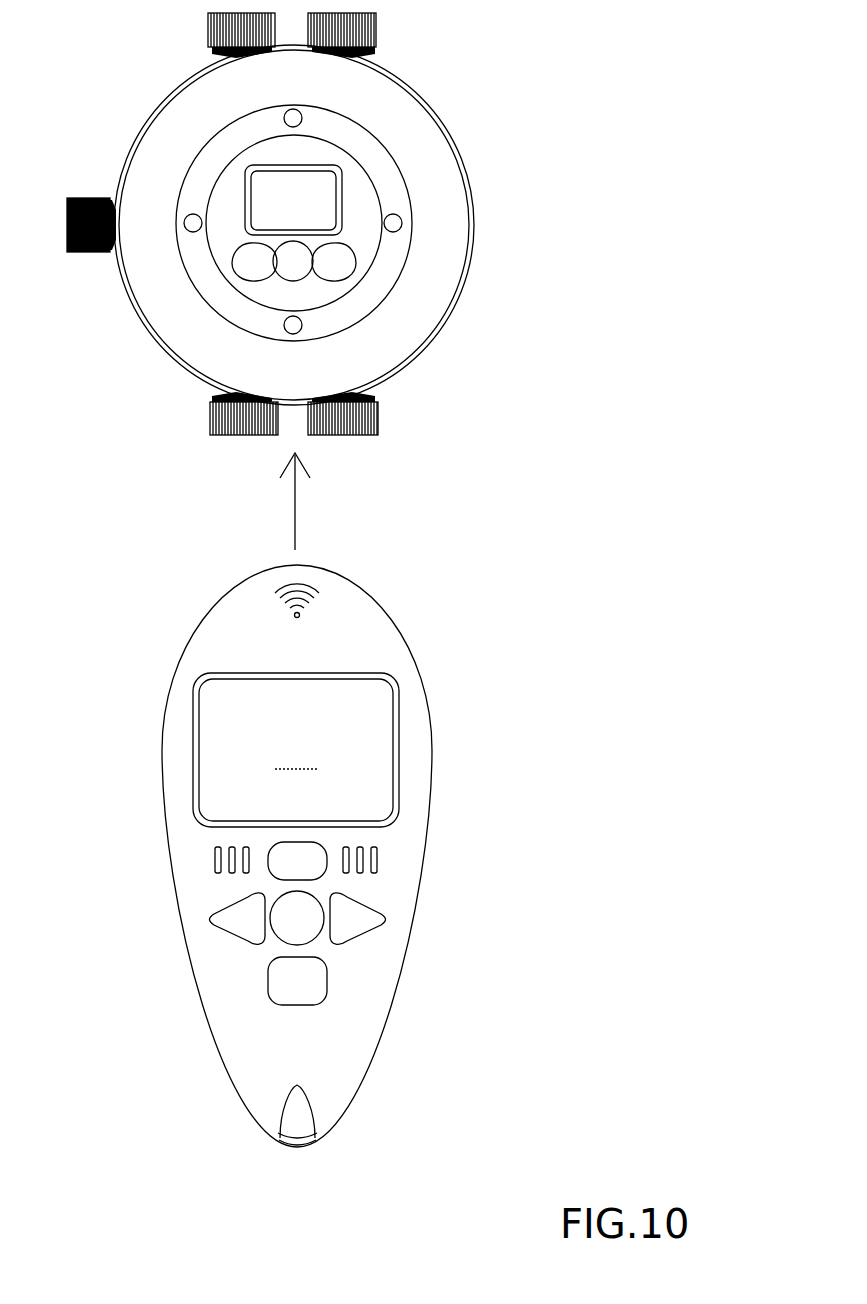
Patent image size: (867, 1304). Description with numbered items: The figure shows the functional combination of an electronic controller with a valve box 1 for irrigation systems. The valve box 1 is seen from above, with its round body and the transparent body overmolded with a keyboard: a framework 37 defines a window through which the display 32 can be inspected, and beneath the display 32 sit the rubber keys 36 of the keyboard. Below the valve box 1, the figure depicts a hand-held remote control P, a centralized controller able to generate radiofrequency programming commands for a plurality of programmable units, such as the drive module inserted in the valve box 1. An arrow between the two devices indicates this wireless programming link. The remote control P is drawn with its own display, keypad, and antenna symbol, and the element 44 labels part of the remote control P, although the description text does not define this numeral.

The valve box 1 is at (480, 321).
The display 32 is at (318, 207).
The rubber keys 36 is at (333, 268).
The framework 37 is at (246, 178).
The remote control unit 44 is at (425, 685).
The remote control P is at (458, 773).